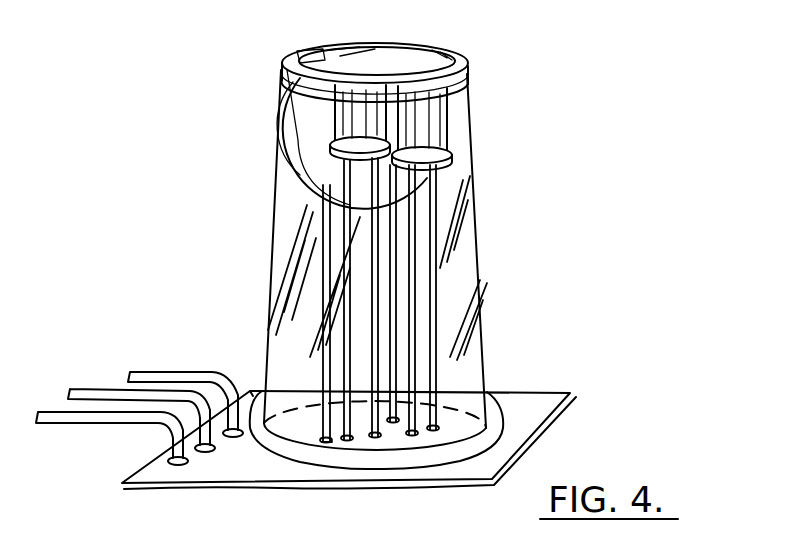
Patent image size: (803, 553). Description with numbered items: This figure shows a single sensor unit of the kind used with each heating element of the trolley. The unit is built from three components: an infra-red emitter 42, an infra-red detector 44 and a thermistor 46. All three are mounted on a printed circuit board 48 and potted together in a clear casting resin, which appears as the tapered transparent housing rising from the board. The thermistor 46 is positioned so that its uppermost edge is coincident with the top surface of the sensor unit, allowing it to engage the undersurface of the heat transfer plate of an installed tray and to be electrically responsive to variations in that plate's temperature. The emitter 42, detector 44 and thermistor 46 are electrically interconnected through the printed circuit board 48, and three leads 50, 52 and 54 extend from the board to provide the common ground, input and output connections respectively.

The infra-red emitter 42 is at (426, 121).
The infra-red detector 44 is at (362, 108).
The thermistor 46 is at (330, 97).
The printed circuit board 48 is at (529, 399).
The lead 50 is at (49, 421).
The lead 52 is at (80, 387).
The lead 54 is at (152, 372).